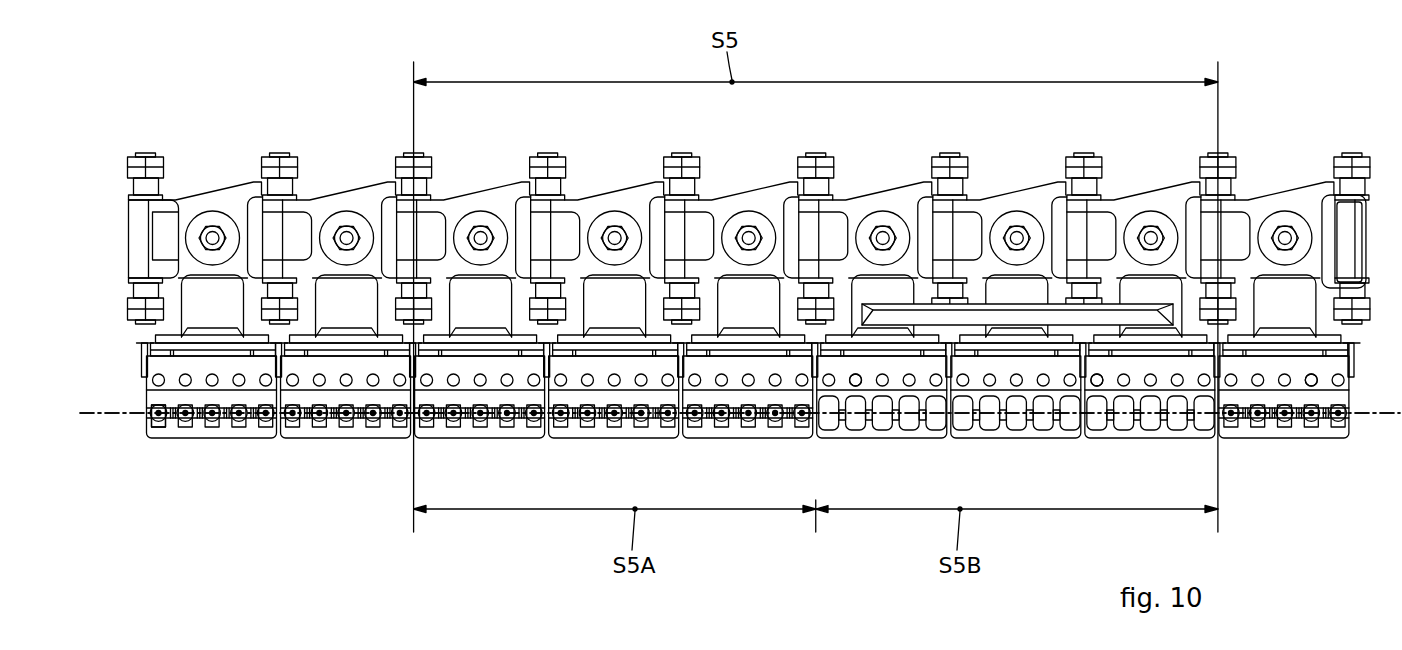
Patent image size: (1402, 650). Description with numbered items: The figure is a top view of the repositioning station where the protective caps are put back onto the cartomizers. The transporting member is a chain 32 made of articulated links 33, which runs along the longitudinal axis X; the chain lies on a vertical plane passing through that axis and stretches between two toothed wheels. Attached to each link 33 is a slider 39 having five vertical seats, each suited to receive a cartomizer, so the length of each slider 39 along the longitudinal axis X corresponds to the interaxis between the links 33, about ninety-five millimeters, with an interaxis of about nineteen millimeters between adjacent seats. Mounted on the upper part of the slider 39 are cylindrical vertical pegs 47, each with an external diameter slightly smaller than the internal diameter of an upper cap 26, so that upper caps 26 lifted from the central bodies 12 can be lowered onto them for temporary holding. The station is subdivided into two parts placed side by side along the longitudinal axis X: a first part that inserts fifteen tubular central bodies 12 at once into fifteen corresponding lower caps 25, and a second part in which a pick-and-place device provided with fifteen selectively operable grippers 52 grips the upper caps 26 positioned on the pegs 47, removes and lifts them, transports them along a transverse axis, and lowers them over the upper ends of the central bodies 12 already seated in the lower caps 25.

The chain 32 is at (113, 238).
The articulated link 33 is at (213, 200).
The slider 39 is at (213, 328).
The central body 12 is at (427, 416).
The upper cap 26 is at (158, 384).
The lower cap 25 is at (162, 426).
The vertical peg 47 is at (856, 386).
The gripper 52 is at (1016, 418).
The longitudinal axis X is at (102, 411).